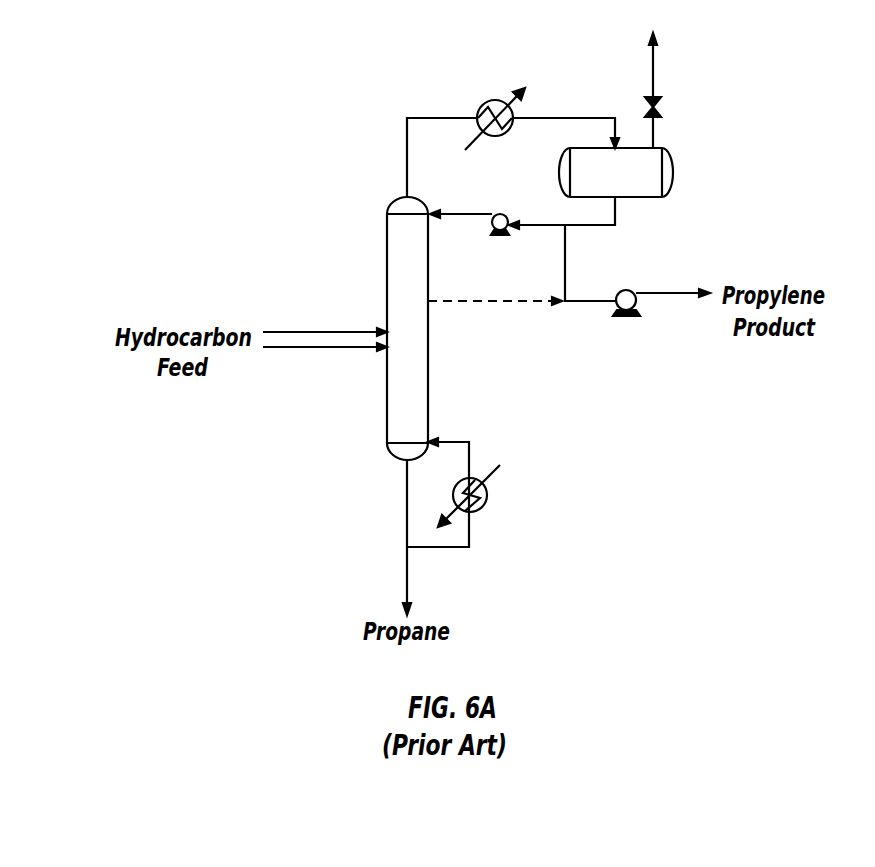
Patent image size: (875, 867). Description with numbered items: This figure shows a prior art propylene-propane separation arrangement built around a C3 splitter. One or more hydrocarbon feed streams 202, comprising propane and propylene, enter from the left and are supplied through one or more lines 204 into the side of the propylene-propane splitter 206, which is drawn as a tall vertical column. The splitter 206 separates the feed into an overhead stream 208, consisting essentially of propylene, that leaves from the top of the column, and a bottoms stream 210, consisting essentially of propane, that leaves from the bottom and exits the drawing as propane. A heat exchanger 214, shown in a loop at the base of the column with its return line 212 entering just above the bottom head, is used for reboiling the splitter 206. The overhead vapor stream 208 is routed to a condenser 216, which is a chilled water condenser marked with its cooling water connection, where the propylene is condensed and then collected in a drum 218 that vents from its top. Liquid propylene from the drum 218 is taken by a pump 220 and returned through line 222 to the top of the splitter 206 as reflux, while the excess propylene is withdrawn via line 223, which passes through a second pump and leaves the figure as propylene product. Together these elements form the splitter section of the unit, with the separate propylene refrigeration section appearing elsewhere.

The hydrocarbon feed stream 202 is at (347, 330).
The feed line 204 is at (347, 351).
The propylene-propane splitter 206 is at (386, 262).
The overhead stream 208 is at (407, 160).
The bottoms stream 210 is at (407, 508).
The reboiler loop line 212 is at (447, 549).
The heat exchanger 214 is at (484, 512).
The condenser 216 is at (495, 100).
The drum 218 is at (640, 148).
The pump 220 is at (500, 237).
The reflux line 222 is at (465, 213).
The excess propylene line 223 is at (665, 293).